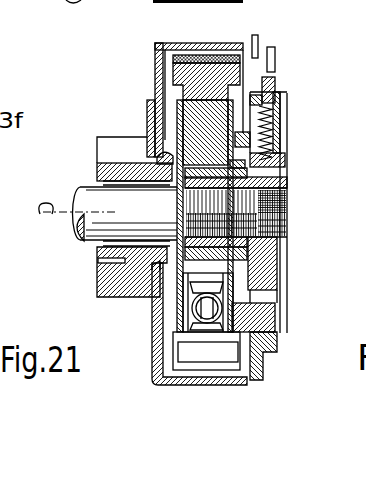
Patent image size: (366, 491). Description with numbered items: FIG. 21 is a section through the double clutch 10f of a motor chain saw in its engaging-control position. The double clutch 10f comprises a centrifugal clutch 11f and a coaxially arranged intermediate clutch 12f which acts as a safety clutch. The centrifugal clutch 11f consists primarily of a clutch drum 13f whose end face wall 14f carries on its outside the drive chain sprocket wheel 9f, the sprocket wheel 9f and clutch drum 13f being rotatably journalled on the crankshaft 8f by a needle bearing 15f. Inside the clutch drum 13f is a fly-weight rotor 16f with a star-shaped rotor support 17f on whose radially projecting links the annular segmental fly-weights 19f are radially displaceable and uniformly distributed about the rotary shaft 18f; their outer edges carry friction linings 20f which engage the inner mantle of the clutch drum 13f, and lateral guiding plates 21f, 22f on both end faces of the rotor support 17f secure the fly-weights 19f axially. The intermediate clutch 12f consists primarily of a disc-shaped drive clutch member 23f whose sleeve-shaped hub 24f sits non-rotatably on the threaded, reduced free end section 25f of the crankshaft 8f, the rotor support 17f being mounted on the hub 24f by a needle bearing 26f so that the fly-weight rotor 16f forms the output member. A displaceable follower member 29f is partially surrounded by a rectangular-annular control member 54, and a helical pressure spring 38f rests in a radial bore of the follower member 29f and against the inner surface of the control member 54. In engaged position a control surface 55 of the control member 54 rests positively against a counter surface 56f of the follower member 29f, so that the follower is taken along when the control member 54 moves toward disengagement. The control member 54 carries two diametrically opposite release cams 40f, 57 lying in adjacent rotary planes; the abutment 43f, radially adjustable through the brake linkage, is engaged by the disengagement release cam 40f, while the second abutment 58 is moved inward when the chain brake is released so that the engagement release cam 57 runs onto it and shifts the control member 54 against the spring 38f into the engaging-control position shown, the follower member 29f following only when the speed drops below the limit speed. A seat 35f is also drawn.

The crankshaft 8f is at (88, 193).
The drive chain sprocket wheel 9f is at (110, 293).
The double clutch 10f is at (237, 23).
The centrifugal clutch 11f is at (152, 47).
The intermediate clutch 12f is at (300, 86).
The clutch drum 13f is at (152, 43).
The end face wall 14f is at (150, 108).
The needle bearing 15f is at (140, 186).
The fly-weight rotor 16f is at (180, 96).
The rotor support 17f is at (177, 127).
The rotary shaft 18f is at (75, 222).
The fly-weights 19f is at (178, 77).
The friction linings 20f is at (197, 53).
The lateral guiding plate 21f is at (147, 147).
The lateral guiding plate 22f is at (237, 333).
The drive clutch member 23f is at (275, 260).
The sleeve-shaped hub 24f is at (207, 188).
The free end section 25f is at (257, 202).
The needle bearing 26f is at (287, 177).
The follower member 29f is at (277, 312).
The spring seat 35f is at (253, 143).
The helical pressure spring 38f is at (267, 118).
The release cam 40f is at (255, 367).
The abutment 43f is at (262, 40).
The control member 54 is at (280, 100).
The control surface 55 is at (272, 323).
The counter surface 56f is at (270, 348).
The release cam 57 is at (277, 77).
The second abutment 58 is at (275, 53).